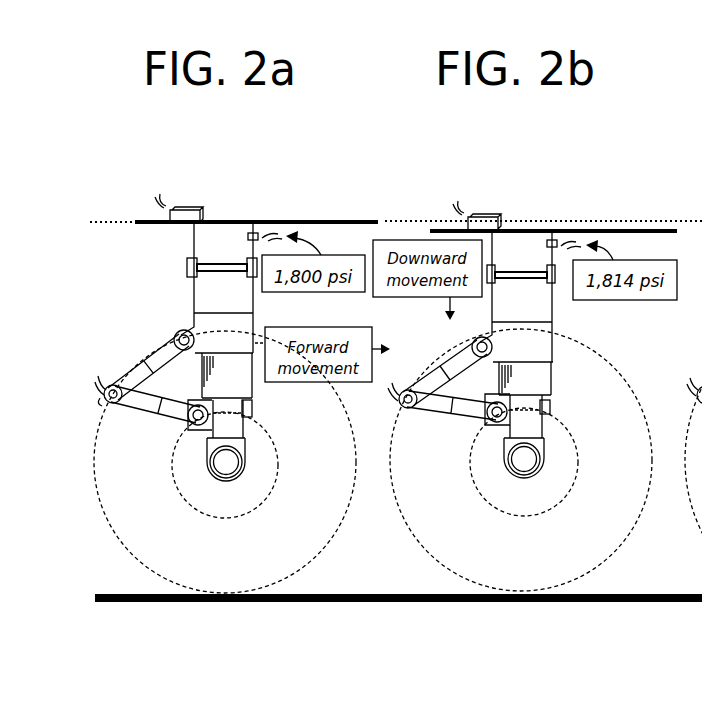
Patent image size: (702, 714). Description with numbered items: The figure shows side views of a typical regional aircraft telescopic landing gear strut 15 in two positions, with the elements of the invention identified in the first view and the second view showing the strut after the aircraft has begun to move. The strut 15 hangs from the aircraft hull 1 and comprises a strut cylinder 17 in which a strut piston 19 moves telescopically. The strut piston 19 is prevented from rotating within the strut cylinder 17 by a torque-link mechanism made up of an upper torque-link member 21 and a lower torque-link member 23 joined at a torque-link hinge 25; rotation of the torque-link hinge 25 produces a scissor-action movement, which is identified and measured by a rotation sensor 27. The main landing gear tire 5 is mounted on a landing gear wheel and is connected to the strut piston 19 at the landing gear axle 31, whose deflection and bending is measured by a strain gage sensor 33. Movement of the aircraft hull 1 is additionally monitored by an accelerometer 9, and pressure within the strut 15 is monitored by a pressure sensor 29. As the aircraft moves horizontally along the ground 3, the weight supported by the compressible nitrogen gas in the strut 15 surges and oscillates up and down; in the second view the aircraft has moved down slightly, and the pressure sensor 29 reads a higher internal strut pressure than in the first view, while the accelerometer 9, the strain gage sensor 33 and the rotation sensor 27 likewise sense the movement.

The aircraft hull 1 is at (268, 222).
The ground 3 is at (352, 593).
The main landing gear tire 5 is at (332, 479).
The accelerometer 9 is at (176, 208).
The telescopic landing gear strut 15 is at (237, 304).
The strut cylinder 17 is at (187, 266).
The strut piston 19 is at (242, 381).
The upper torque-link member 21 is at (148, 351).
The lower torque-link member 23 is at (136, 398).
The torque-link hinge 25 is at (108, 384).
The rotation sensor 27 is at (106, 402).
The pressure sensor 29 is at (249, 233).
The landing gear axle 31 is at (216, 462).
The strain gage sensor 33 is at (237, 471).